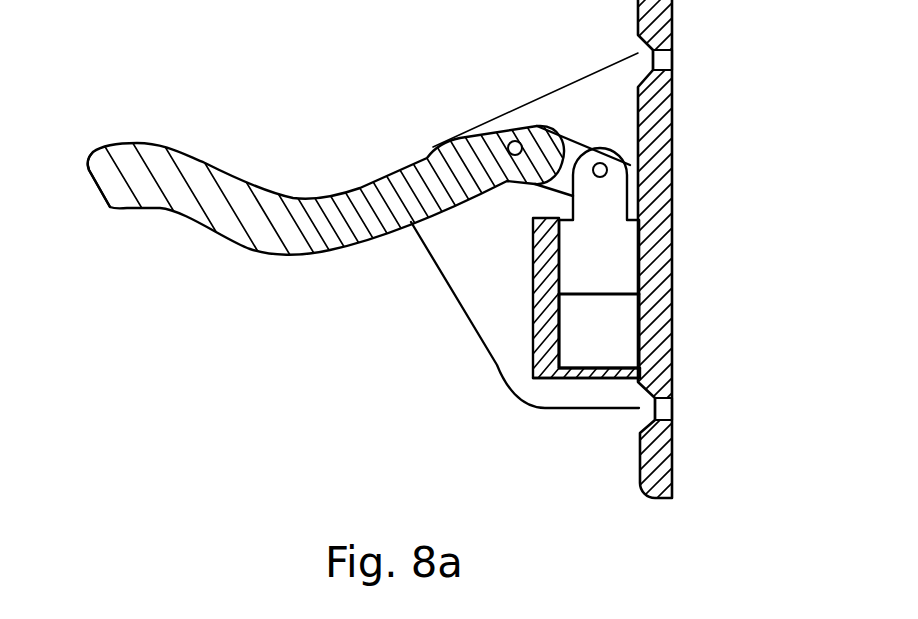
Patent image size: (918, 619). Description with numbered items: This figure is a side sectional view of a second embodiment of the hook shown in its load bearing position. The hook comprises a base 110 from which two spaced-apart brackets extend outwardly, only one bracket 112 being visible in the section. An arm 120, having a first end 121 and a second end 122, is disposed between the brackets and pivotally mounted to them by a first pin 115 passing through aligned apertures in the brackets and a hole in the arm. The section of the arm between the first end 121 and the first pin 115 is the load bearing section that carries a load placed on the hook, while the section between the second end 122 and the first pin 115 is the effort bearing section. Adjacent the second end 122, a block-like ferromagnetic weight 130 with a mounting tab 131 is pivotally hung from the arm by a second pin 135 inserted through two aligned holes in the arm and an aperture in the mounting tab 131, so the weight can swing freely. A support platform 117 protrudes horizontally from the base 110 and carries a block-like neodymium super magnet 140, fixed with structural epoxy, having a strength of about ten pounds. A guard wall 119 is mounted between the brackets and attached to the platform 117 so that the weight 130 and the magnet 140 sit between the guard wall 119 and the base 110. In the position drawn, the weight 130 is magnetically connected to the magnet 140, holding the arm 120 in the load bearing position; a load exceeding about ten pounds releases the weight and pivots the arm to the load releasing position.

The base 110 is at (660, 470).
The bracket 112 is at (465, 278).
The first pin 115 is at (513, 141).
The support platform 117 is at (597, 371).
The guard wall 119 is at (545, 326).
The arm 120 is at (290, 233).
The first end 121 is at (97, 185).
The second end 122 is at (630, 167).
The ferromagnetic weight 130 is at (615, 262).
The mounting tab 131 is at (605, 197).
The second pin 135 is at (602, 163).
The magnet 140 is at (608, 338).